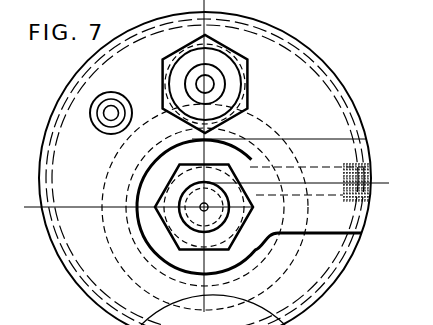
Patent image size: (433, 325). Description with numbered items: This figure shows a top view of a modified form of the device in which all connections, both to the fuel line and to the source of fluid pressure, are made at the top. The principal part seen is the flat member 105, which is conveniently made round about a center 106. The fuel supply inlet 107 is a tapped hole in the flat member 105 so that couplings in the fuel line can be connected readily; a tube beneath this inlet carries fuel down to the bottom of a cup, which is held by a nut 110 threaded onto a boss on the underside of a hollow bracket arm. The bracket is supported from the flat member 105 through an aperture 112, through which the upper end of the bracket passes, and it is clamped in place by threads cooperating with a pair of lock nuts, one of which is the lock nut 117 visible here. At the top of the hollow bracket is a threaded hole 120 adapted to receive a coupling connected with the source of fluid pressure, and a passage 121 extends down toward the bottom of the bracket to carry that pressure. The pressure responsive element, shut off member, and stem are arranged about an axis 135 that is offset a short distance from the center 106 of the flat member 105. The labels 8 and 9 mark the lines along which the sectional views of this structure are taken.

The flat member 105 is at (205, 168).
The center 106 is at (240, 160).
The fuel supply inlet 107 is at (128, 84).
The nut 110 is at (213, 310).
The aperture 112 is at (247, 70).
The lock nut 117 is at (217, 41).
The threaded hole 120 is at (190, 87).
The passage 121 is at (192, 88).
The axis 135 is at (208, 208).
The section line 8 is at (306, 186).
The section line 9 is at (130, 211).